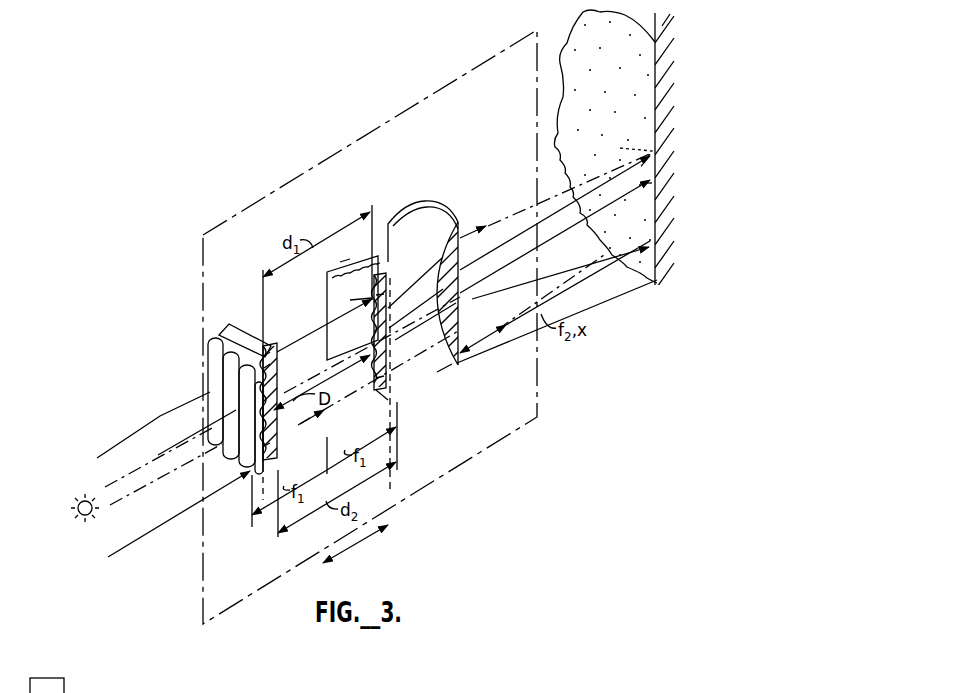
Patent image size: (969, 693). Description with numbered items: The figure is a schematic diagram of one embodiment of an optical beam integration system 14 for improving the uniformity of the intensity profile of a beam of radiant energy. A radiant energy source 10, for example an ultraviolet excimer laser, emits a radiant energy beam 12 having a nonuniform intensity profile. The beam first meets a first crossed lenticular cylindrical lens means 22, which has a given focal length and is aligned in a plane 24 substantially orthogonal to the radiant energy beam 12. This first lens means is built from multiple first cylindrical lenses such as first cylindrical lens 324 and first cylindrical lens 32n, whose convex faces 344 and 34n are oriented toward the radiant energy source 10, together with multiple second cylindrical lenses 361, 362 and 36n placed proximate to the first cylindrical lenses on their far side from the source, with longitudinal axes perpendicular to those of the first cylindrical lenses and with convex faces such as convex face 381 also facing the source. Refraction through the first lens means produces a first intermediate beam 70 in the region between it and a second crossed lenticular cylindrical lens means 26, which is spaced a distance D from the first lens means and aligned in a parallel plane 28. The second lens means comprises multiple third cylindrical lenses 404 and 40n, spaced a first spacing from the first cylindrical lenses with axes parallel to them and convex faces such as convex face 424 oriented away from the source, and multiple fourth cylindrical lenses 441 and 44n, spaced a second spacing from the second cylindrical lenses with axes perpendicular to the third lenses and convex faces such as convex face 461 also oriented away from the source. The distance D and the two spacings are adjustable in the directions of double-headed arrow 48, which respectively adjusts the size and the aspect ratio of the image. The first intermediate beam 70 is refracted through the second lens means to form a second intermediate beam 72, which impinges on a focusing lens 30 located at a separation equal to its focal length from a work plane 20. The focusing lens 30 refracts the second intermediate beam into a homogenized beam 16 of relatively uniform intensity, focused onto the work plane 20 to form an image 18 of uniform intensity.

The radiant energy source 10 is at (74, 506).
The radiant energy beam 12 is at (145, 538).
The optical beam integration system 14 is at (372, 131).
The homogenized beam 16 is at (604, 163).
The image 18 is at (651, 190).
The work plane 20 is at (647, 284).
The first crossed lenticular cylindrical lens means 22 is at (228, 388).
The plane 24 is at (270, 491).
The second crossed lenticular cylindrical lens means 26 is at (371, 304).
The plane 28 is at (390, 488).
The focusing lens 30 is at (461, 224).
The first cylindrical lens 32n is at (213, 337).
The first cylindrical lens 324 is at (245, 370).
The convex face 344 is at (240, 388).
The convex face 34n is at (210, 406).
The second cylindrical lens 361 is at (269, 357).
The second cylindrical lens 362 is at (268, 369).
The second cylindrical lens 36n is at (277, 445).
The convex face 381 is at (265, 346).
The third cylindrical lens 40n is at (342, 262).
The third cylindrical lens 404 is at (374, 299).
The convex face 424 is at (388, 403).
The fourth cylindrical lens 441 is at (386, 280).
The fourth cylindrical lens 44n is at (390, 376).
The convex face 461 is at (388, 296).
The double-headed arrow 48 is at (350, 548).
The first intermediate beam 70 is at (316, 310).
The second intermediate beam 72 is at (439, 373).